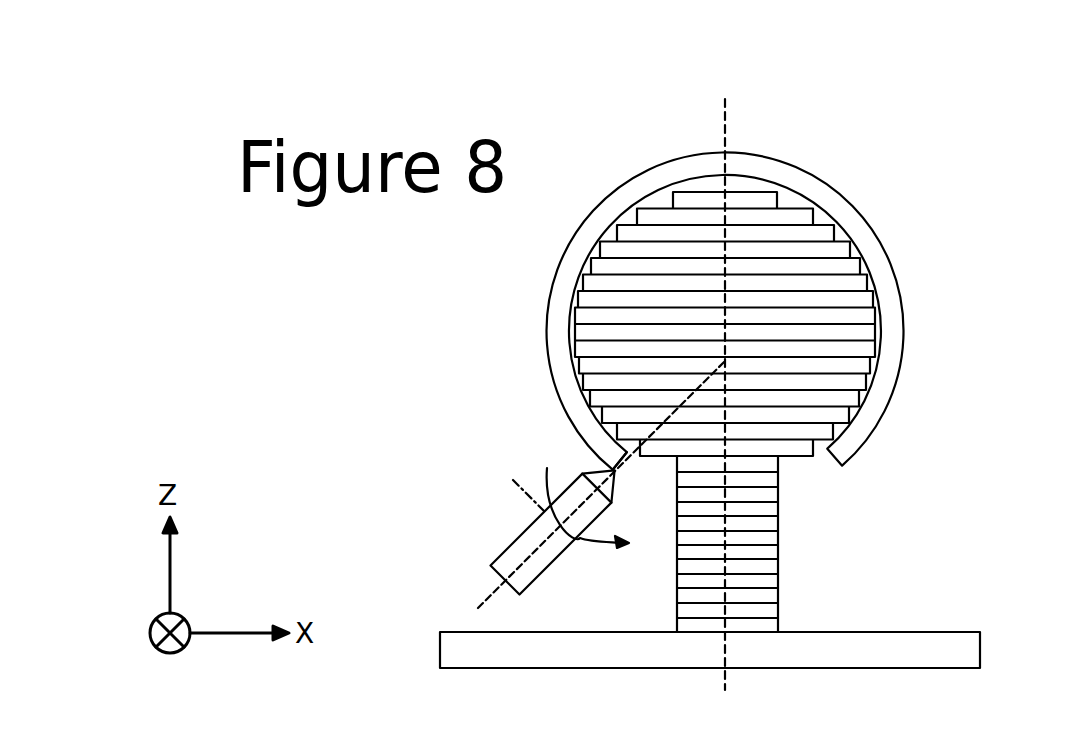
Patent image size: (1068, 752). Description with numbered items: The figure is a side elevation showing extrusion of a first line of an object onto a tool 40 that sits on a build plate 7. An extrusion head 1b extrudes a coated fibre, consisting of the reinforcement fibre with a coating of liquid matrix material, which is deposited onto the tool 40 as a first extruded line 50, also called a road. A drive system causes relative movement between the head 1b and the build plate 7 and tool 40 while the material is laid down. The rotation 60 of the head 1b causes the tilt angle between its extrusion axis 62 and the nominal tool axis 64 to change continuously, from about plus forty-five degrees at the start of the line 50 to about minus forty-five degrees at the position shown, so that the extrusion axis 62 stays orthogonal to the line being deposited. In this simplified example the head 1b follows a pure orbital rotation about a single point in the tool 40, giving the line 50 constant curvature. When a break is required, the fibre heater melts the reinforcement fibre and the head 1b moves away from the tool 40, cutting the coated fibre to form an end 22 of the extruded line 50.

The build plate 7 is at (982, 637).
The end of the extruded line 22 is at (620, 460).
The tool 40 is at (858, 318).
The extruded line 50 is at (855, 202).
The rotation of the head 60 is at (550, 470).
The extrusion axis 62 is at (702, 382).
The tool axis 64 is at (727, 113).
The extrusion head 1b is at (514, 484).